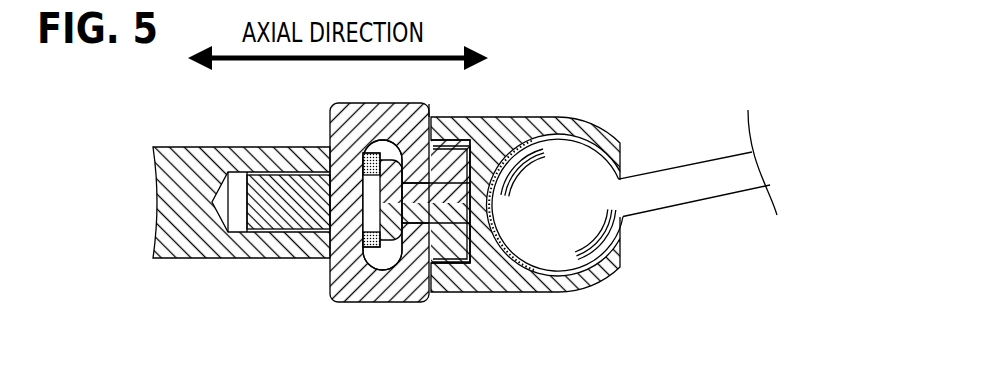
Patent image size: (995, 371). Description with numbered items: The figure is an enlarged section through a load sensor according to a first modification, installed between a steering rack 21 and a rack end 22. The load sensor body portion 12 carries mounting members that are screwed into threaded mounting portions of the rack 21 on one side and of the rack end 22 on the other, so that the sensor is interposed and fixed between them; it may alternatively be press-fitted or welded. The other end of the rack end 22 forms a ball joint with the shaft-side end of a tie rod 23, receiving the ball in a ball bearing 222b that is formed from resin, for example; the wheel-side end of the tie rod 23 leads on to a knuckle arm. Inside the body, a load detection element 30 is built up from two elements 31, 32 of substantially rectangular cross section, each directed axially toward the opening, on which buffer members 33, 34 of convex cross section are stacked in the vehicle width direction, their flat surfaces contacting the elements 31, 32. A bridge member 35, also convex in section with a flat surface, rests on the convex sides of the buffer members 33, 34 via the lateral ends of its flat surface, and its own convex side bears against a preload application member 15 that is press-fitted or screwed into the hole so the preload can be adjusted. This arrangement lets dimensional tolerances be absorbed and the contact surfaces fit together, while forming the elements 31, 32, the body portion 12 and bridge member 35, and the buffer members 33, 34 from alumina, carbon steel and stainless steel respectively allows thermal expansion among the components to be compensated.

The load sensor body portion 12 is at (330, 299).
The preload application member 15 is at (472, 158).
The rack 21 is at (200, 257).
The rack end 22 is at (568, 281).
The ball bearing 222b is at (518, 280).
The tie rod 23 is at (683, 198).
The load detection element 30 is at (430, 293).
The element 31 is at (363, 152).
The element 32 is at (368, 252).
The buffer member 33 is at (377, 155).
The buffer member 34 is at (397, 247).
The bridge member 35 is at (430, 116).